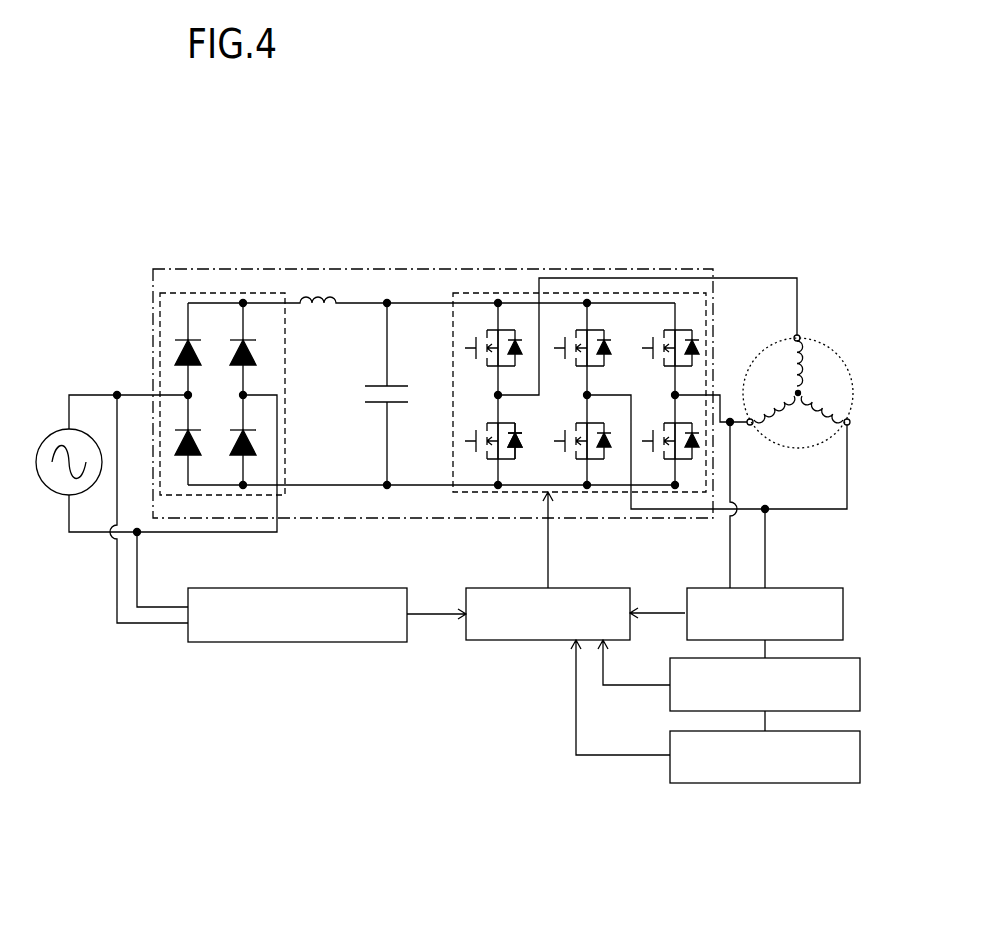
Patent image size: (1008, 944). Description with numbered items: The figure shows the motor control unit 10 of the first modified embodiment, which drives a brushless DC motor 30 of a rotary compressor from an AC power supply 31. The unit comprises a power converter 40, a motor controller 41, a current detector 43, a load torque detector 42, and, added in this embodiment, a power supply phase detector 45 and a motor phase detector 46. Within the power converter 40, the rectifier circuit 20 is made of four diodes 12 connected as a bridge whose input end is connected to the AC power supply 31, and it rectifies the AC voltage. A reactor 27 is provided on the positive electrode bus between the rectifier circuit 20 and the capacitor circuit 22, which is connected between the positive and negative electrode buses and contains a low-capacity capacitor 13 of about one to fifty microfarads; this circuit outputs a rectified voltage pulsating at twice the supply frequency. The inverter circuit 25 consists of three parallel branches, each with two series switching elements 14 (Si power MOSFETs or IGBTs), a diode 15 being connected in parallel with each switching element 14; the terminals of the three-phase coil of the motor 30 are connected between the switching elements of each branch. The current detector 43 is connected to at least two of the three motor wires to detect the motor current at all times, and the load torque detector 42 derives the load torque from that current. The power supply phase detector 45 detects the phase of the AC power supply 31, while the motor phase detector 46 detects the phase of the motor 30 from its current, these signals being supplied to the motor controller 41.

The motor control unit 10 is at (432, 200).
The diode 12 is at (178, 357).
The capacitor 13 is at (398, 403).
The switching element 14 is at (478, 432).
The diode 15 is at (515, 446).
The rectifier circuit 20 is at (252, 293).
The capacitor circuit 22 is at (387, 462).
The inverter circuit 25 is at (488, 293).
The reactor 27 is at (344, 298).
The motor 30 is at (838, 326).
The AC power supply 31 is at (57, 430).
The power converter 40 is at (663, 268).
The motor controller 41 is at (487, 640).
The load torque detector 42 is at (857, 658).
The current detector 43 is at (820, 588).
The power supply phase detector 45 is at (272, 642).
The motor phase detector 46 is at (818, 783).